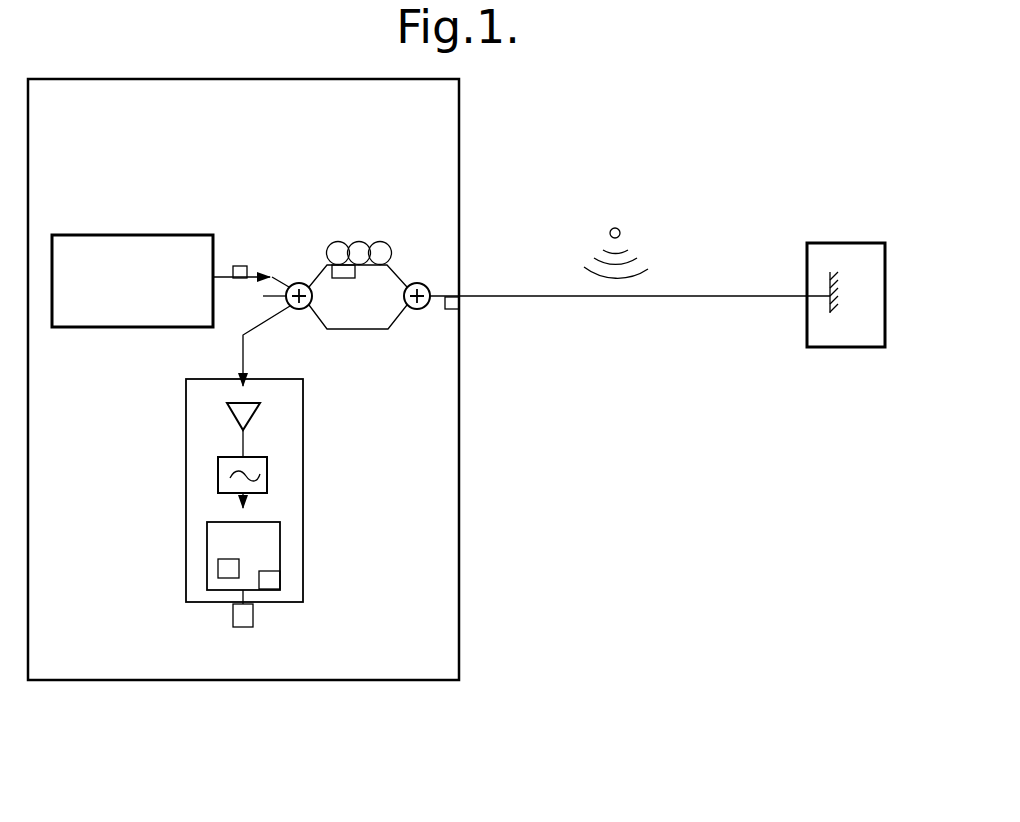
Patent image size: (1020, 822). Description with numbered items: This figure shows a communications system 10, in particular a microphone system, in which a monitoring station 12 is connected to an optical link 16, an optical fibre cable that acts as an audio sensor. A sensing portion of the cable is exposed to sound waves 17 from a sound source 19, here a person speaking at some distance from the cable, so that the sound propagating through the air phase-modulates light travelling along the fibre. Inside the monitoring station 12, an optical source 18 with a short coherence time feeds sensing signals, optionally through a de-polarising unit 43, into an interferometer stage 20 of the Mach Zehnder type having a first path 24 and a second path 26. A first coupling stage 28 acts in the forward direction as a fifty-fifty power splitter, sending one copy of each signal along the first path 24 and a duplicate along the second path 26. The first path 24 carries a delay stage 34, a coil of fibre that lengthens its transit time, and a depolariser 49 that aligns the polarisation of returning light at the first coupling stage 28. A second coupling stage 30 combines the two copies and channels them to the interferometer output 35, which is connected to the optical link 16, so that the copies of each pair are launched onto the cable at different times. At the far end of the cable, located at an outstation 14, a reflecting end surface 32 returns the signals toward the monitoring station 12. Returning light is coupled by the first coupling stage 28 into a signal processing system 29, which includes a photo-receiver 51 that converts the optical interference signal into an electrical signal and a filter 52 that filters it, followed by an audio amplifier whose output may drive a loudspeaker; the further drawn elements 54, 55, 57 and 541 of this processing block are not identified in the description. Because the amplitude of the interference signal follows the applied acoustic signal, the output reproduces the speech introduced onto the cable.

The communications system 10 is at (540, 666).
The monitoring station 12 is at (278, 670).
The outstation 14 is at (847, 338).
The optical link 16 is at (733, 298).
The sound waves 17 is at (646, 276).
The optical source 18 is at (155, 258).
The sound source 19 is at (613, 228).
The interferometer stage 20 is at (386, 342).
The first path 24 is at (324, 263).
The second path 26 is at (398, 320).
The first coupling stage 28 is at (300, 309).
The signal processing system 29 is at (205, 612).
The second coupling stage 30 is at (420, 283).
The reflecting end surface 32 is at (826, 280).
The delay stage 34 is at (380, 241).
The output 35 is at (459, 302).
The de-polarising unit 43 is at (241, 266).
The depolariser 49 is at (343, 278).
The photo-receiver 51 is at (232, 415).
The filter 52 is at (218, 478).
The signal processor 54 is at (267, 528).
The memory 55 is at (268, 578).
The processor unit 57 is at (222, 568).
The output port 541 is at (243, 615).